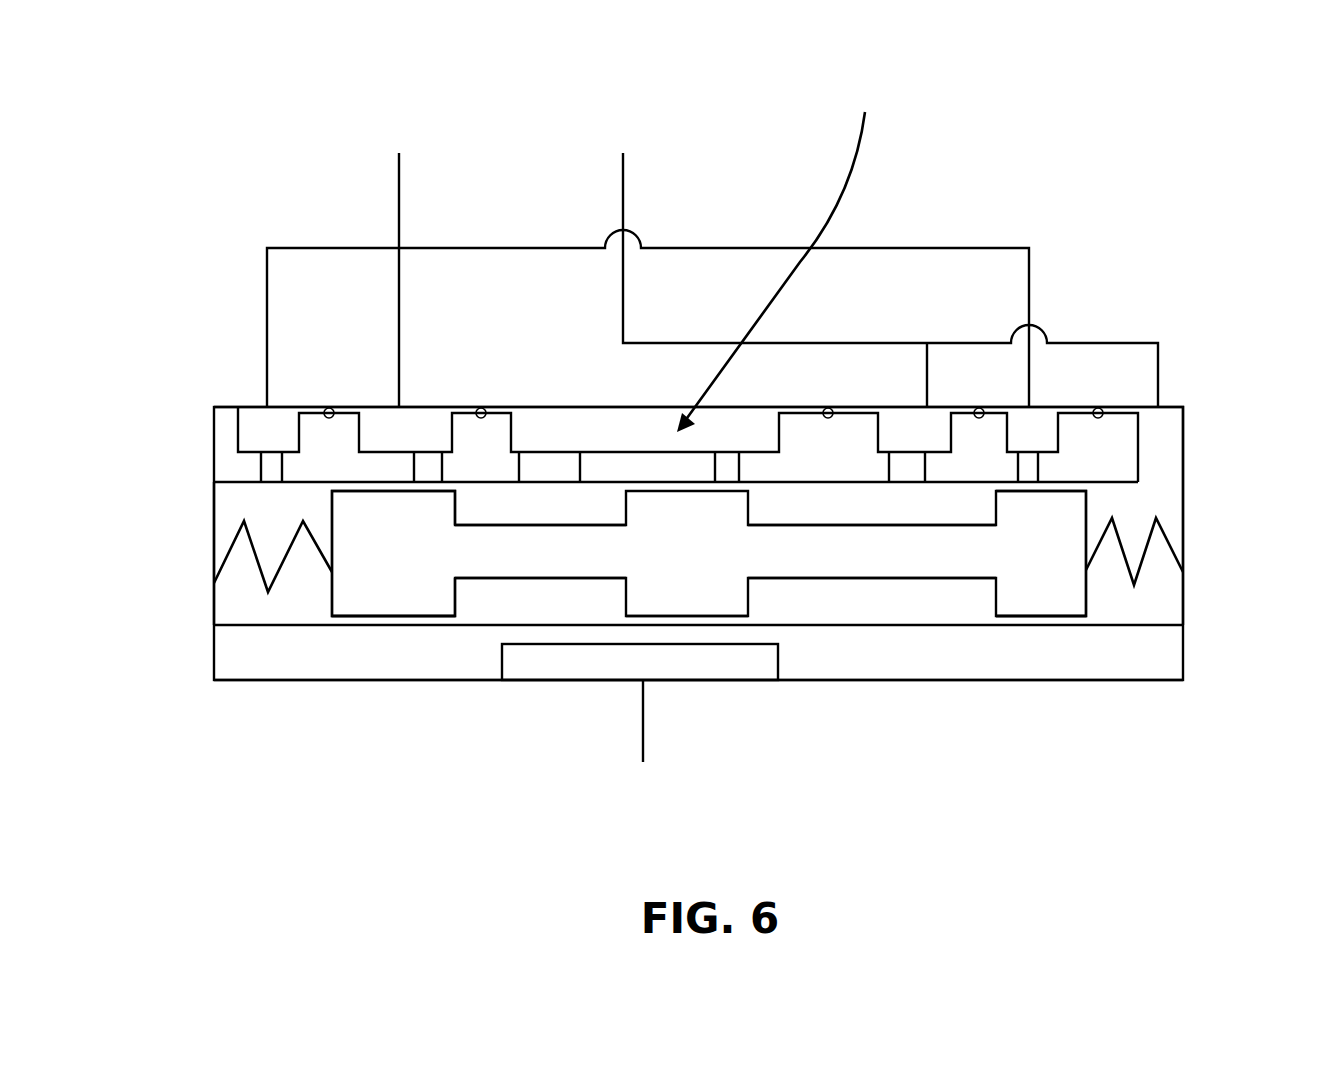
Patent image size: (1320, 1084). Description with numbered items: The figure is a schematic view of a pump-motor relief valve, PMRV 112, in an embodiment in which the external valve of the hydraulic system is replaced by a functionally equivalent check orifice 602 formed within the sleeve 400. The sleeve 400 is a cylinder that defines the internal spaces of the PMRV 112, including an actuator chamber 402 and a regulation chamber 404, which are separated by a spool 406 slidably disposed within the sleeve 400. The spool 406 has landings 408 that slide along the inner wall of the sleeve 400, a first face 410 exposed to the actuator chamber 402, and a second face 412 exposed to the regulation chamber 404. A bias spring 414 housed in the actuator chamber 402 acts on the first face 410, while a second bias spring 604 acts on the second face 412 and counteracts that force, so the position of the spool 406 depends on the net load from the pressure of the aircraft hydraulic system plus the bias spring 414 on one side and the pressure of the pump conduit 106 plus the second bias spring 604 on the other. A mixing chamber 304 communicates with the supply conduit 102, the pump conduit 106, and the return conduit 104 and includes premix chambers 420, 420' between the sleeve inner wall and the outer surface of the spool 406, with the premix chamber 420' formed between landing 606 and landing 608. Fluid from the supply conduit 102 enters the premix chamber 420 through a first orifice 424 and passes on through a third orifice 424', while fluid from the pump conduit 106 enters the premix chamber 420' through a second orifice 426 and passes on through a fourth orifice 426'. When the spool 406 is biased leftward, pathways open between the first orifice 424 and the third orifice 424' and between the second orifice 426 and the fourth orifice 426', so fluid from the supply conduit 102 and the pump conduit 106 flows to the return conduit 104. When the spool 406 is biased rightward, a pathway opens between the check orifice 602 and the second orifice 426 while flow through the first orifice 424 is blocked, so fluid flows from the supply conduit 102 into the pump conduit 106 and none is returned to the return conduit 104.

The supply conduit 102 is at (399, 207).
The return conduit 104 is at (642, 715).
The pump conduit 106 is at (623, 200).
The PMRV 112 is at (995, 128).
The mixing chamber 304 is at (784, 255).
The sleeve 400 is at (232, 653).
The actuator chamber 402 is at (228, 605).
The regulation chamber 404 is at (1148, 493).
The spool 406 is at (845, 555).
The landing 408 is at (393, 620).
The first face 410 is at (330, 598).
The second face 412 is at (1087, 595).
The bias spring 414 is at (230, 550).
The premix chamber 420 is at (525, 646).
The premix chamber 420' is at (872, 663).
The first orifice 424 is at (450, 335).
The third orifice 424' is at (642, 336).
The second orifice 426 is at (940, 336).
The fourth orifice 426' is at (806, 340).
The check orifice 602 is at (1027, 458).
The second bias spring 604 is at (1168, 540).
The landing 606 is at (1035, 615).
The landing 608 is at (705, 613).